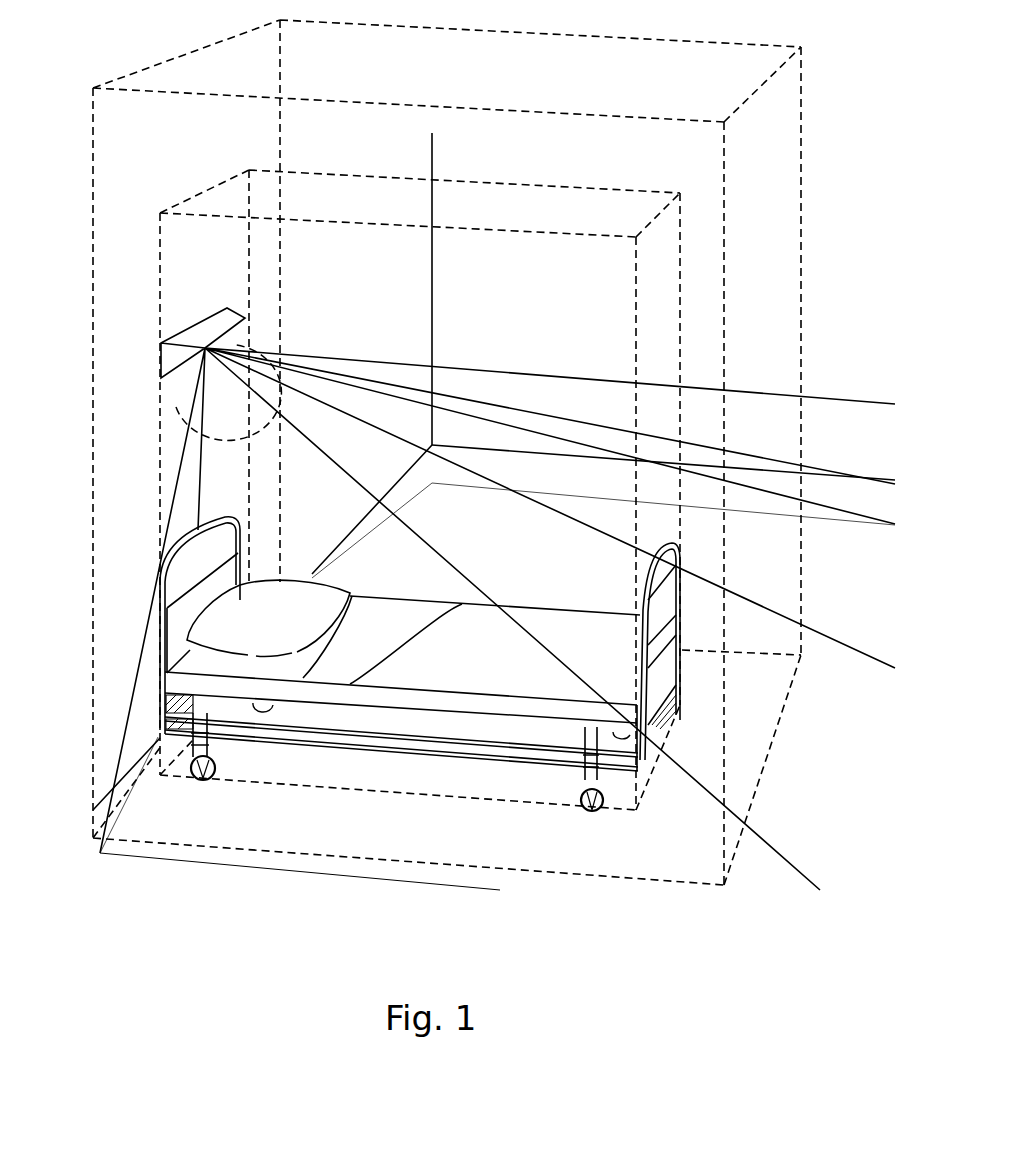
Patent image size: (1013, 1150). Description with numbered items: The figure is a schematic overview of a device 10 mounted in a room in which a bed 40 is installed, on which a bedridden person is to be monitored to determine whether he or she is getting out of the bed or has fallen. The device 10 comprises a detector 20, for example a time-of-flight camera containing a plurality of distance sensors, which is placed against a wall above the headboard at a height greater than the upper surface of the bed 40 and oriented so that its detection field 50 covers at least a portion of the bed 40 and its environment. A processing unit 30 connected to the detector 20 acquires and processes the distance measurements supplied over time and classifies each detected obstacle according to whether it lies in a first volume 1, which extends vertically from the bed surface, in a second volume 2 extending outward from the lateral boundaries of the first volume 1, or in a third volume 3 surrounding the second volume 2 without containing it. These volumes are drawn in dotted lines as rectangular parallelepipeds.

The first spatial volume 1 is at (160, 230).
The second spatial volume 2 is at (93, 118).
The third volume 3 is at (484, 448).
The device 10 is at (152, 337).
The detector 20 is at (60, 307).
The processing unit 30 is at (52, 342).
The bed 40 is at (140, 634).
The detection field 50 is at (177, 430).